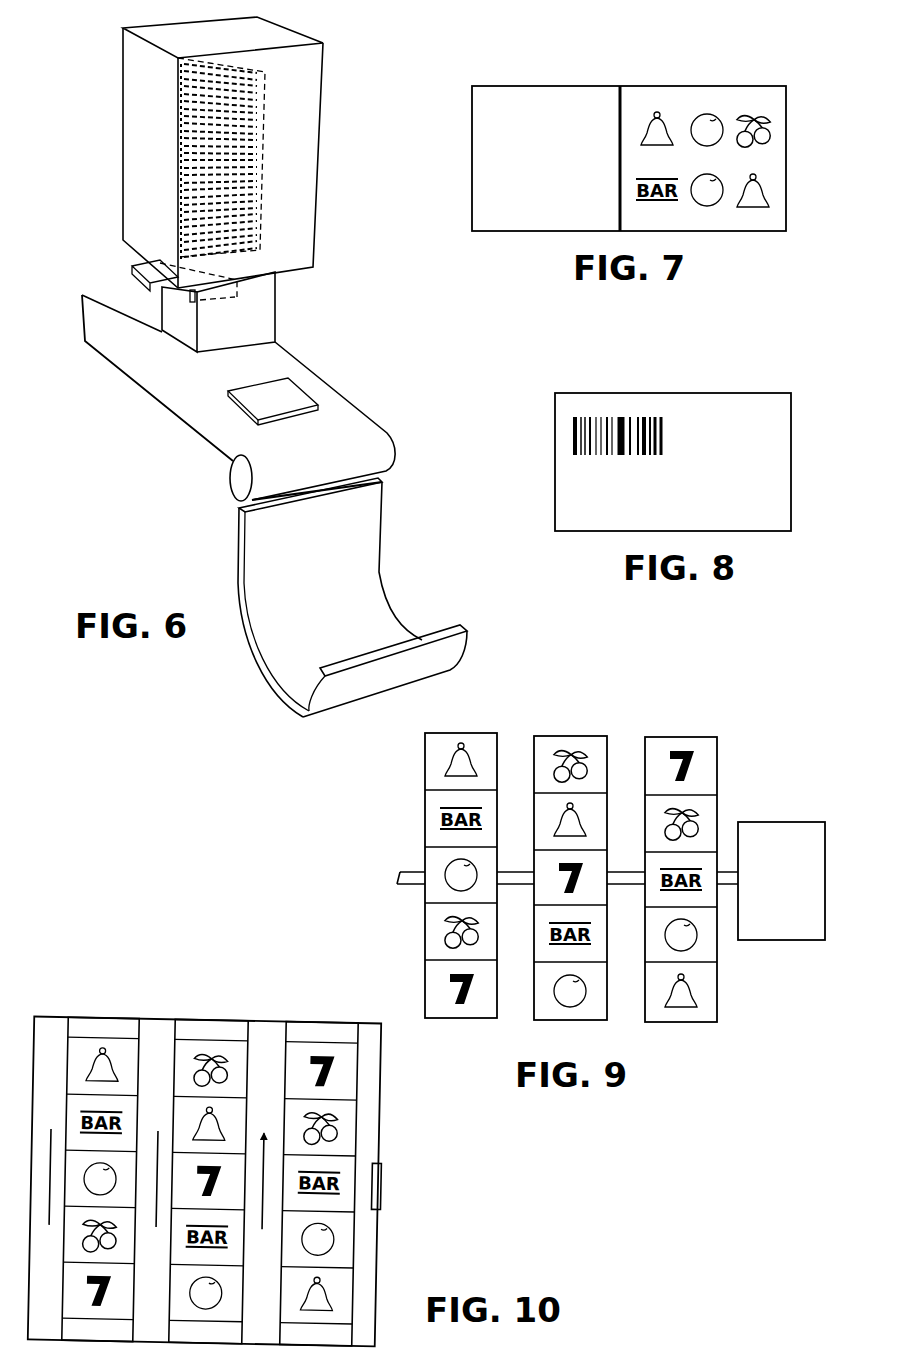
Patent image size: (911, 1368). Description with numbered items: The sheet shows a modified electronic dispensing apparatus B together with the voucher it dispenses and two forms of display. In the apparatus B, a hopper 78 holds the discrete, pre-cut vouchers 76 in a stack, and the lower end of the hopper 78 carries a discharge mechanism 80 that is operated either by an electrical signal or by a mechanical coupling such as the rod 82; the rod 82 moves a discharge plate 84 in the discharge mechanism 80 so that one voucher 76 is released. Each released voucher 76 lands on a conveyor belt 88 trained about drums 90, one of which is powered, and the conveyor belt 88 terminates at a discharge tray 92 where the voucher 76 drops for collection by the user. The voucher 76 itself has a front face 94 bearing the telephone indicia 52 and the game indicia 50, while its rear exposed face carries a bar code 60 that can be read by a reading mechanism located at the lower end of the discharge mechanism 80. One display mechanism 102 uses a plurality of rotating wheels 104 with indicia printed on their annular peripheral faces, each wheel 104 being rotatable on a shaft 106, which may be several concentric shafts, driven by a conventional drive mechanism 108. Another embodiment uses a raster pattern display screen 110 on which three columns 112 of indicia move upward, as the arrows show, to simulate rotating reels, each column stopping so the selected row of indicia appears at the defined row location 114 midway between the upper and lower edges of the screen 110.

In FIG. 6, the hopper 78 is at (325, 68).
In FIG. 7, the hopper 78 is at (803, 141).
In FIG. 8, the hopper 78 is at (719, 386).
In FIG. 6, the discrete voucher 76 is at (262, 151).
In FIG. 6, the rod 82 is at (130, 272).
In FIG. 6, the discharge plate 84 is at (170, 293).
In FIG. 6, the discharge mechanism 80 is at (250, 306).
In FIG. 6, the electronic dispensing apparatus B is at (352, 335).
In FIG. 6, the conveyor belt 88 is at (330, 395).
In FIG. 6, the drum 90 is at (231, 482).
In FIG. 6, the discharge tray 92 is at (239, 580).
In FIG. 7, the telephone indicia 52 is at (534, 85).
In FIG. 7, the front face 94 is at (757, 98).
In FIG. 7, the game indicia 50 is at (756, 193).
In FIG. 8, the bar code 60 is at (622, 417).
In FIG. 9, the rotating wheel 104 is at (485, 732).
In FIG. 9, the display mechanism 102 is at (744, 730).
In FIG. 9, the drive mechanism 108 is at (790, 822).
In FIG. 9, the shaft 106 is at (412, 872).
In FIG. 10, the columns of indicia 112 is at (119, 1031).
In FIG. 10, the raster pattern display screen 110 is at (267, 1037).
In FIG. 10, the defined row location 114 is at (383, 1184).